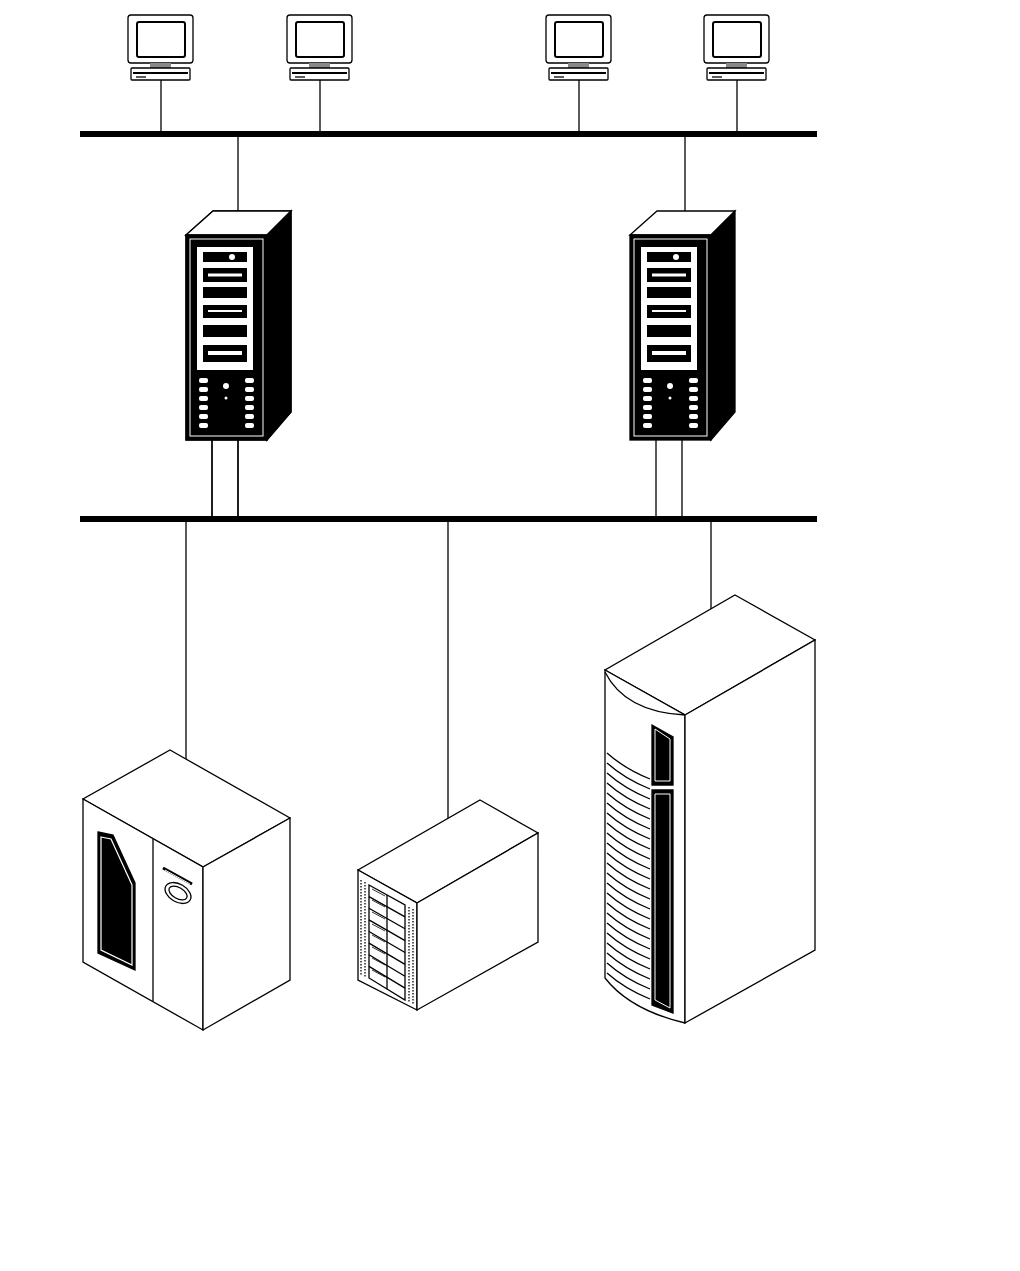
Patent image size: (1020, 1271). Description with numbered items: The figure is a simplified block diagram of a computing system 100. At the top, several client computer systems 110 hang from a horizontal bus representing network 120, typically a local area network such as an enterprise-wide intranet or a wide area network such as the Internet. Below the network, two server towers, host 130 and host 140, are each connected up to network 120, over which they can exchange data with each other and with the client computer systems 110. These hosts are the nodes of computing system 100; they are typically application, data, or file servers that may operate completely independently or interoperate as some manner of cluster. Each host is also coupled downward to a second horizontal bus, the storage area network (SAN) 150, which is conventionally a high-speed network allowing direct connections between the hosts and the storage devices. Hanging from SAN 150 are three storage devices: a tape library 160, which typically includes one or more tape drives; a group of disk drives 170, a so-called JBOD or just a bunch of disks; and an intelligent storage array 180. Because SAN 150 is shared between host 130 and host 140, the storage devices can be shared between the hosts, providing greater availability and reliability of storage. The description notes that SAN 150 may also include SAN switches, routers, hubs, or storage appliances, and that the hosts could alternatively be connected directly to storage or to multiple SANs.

The computing system 100 is at (692, 1167).
The client computer systems 110 is at (770, 43).
The network 120 is at (787, 138).
The host 130 is at (186, 328).
The host 140 is at (630, 328).
The storage area network (SAN) 150 is at (735, 516).
The tape library 160 is at (222, 797).
The group of disk drives (JBOD) 170 is at (483, 823).
The intelligent storage array 180 is at (815, 825).